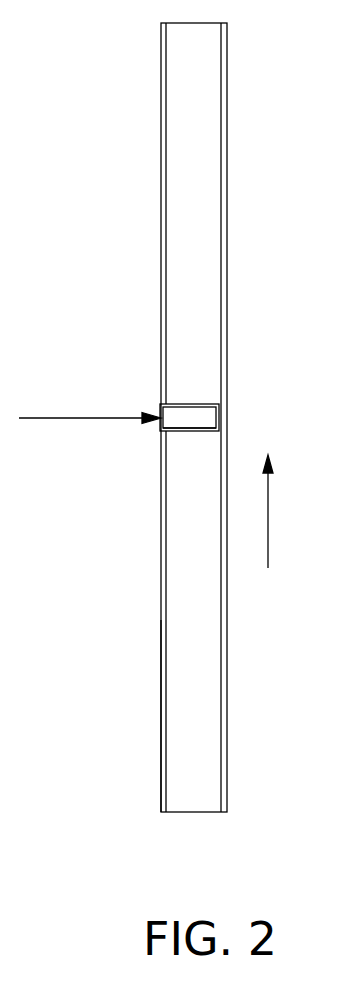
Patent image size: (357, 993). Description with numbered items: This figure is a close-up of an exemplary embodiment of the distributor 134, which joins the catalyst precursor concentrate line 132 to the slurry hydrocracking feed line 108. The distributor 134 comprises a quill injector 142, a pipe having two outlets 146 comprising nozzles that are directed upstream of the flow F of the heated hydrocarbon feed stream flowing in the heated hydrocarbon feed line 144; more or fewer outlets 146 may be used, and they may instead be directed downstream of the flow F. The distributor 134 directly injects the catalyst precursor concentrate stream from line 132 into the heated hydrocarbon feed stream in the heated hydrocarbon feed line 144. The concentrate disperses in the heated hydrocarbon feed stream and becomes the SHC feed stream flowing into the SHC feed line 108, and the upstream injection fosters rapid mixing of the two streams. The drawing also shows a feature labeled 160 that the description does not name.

The SHC feed line 108 is at (161, 219).
The catalyst precursor concentrate line 132 is at (57, 418).
The distributor 134 is at (130, 382).
The quill injector 142 is at (203, 404).
The heated hydrocarbon feed line 144 is at (161, 665).
The outlets 146 is at (217, 434).
The inner surface of block 160 is at (219, 401).
The flow F is at (268, 503).